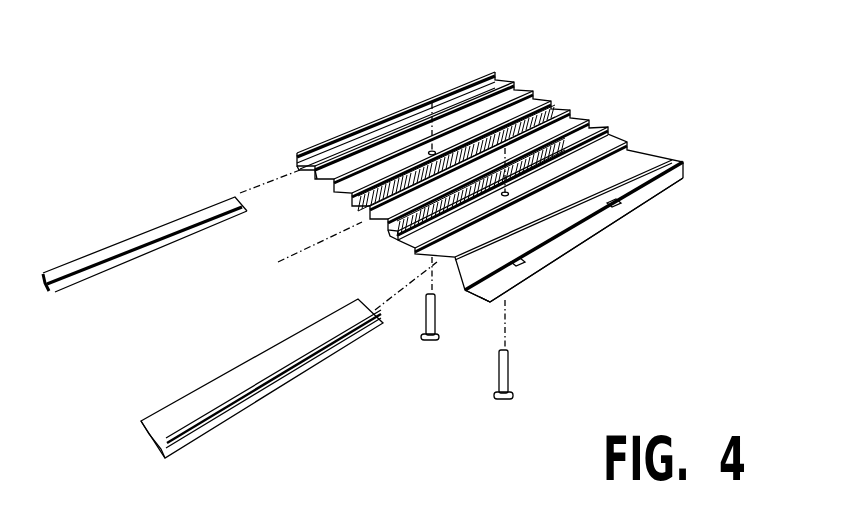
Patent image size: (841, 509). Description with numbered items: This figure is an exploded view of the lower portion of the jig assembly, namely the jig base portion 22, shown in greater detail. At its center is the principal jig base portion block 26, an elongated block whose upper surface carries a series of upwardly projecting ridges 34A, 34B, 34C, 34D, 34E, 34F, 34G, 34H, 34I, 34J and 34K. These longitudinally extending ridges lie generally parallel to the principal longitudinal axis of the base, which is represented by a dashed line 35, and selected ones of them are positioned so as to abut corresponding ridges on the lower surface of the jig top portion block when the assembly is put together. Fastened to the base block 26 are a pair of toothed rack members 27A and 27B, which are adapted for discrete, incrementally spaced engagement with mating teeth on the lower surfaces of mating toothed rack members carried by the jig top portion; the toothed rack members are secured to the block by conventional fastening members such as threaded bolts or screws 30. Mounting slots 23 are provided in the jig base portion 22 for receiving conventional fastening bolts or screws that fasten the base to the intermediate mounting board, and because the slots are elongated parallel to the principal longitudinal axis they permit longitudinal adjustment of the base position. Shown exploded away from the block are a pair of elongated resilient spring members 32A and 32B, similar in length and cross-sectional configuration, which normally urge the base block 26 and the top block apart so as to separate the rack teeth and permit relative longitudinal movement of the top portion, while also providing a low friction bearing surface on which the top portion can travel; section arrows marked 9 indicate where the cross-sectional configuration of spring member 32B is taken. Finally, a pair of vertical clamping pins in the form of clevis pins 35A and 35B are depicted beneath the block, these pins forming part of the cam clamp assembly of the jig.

The jig base portion 22 is at (601, 118).
The mounting slots 23 is at (611, 206).
The principal jig base portion block 26 is at (633, 203).
The toothed rack member 27A is at (364, 210).
The toothed rack member 27B is at (398, 238).
The threaded bolts or screws 30 is at (407, 180).
The elongated resilient spring member 32A is at (63, 281).
The elongated resilient spring member 32B is at (198, 405).
The upwardly projecting ridge 34A is at (495, 71).
The upwardly projecting ridge 34B is at (514, 81).
The upwardly projecting ridge 34C is at (533, 90).
The upwardly projecting ridge 34D is at (551, 100).
The upwardly projecting ridge 34E is at (570, 109).
The upwardly projecting ridge 34F is at (589, 119).
The upwardly projecting ridge 34G is at (608, 127).
The upwardly projecting ridge 34H is at (627, 142).
The upwardly projecting ridge 34I is at (665, 163).
The upwardly projecting ridge 34J is at (683, 163).
The upwardly projecting ridge 34K is at (684, 178).
The dashed line 35 is at (256, 254).
The clevis pin 35A is at (434, 322).
The clevis pin 35B is at (509, 379).
The section line 9 is at (247, 353).